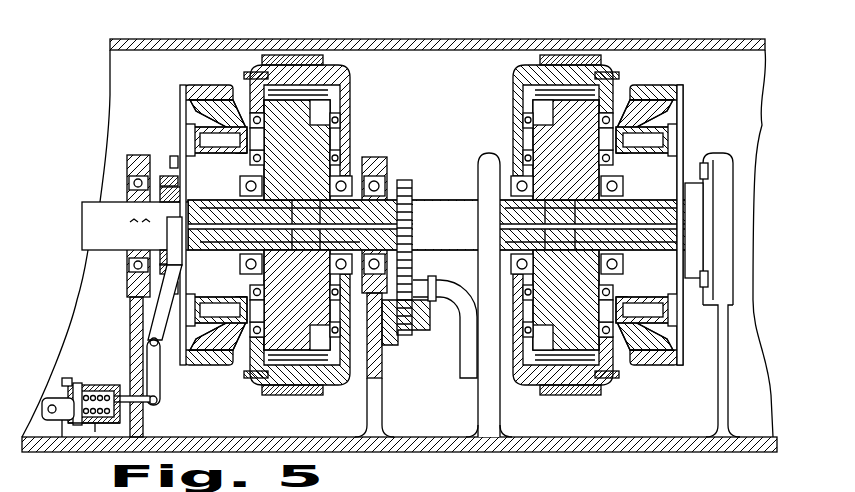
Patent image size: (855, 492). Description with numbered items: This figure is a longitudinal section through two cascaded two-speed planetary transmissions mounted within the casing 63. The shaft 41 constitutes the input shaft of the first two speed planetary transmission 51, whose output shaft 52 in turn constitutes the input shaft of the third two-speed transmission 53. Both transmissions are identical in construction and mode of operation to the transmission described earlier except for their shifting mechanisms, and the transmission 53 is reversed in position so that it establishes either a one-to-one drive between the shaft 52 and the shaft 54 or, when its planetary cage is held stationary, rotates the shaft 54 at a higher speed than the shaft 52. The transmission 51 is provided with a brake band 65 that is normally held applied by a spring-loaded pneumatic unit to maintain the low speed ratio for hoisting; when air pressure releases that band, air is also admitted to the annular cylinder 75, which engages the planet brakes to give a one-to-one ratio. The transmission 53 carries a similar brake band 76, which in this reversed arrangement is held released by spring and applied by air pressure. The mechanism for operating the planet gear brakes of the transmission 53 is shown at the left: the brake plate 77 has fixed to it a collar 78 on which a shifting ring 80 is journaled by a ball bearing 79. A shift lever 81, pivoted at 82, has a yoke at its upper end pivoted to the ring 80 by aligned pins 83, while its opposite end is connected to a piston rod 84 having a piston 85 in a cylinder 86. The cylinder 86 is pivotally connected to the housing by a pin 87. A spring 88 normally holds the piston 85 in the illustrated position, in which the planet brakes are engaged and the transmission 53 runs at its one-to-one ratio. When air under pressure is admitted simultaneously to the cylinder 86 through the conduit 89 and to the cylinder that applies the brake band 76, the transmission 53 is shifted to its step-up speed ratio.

The shaft 41 is at (748, 252).
The two speed planetary transmission 51 is at (512, 82).
The output shaft 52 is at (437, 203).
The third two-speed transmission 53 is at (352, 80).
The shaft 54 is at (90, 198).
The casing 63 is at (258, 43).
The brake band 65 is at (585, 56).
The annular cylinder 75 is at (694, 178).
The brake band 76 is at (302, 57).
The brake plate 77 is at (198, 88).
The collar 78 is at (166, 176).
The ball bearing 79 is at (172, 158).
The shifting ring 80 is at (180, 135).
The shift lever 81 is at (157, 312).
The pivot 82 is at (160, 342).
The pins 83 is at (142, 226).
The piston rod 84 is at (122, 385).
The piston 85 is at (80, 386).
The cylinder 86 is at (100, 392).
The pin 87 is at (45, 405).
The spring 88 is at (100, 424).
The conduit 89 is at (66, 380).